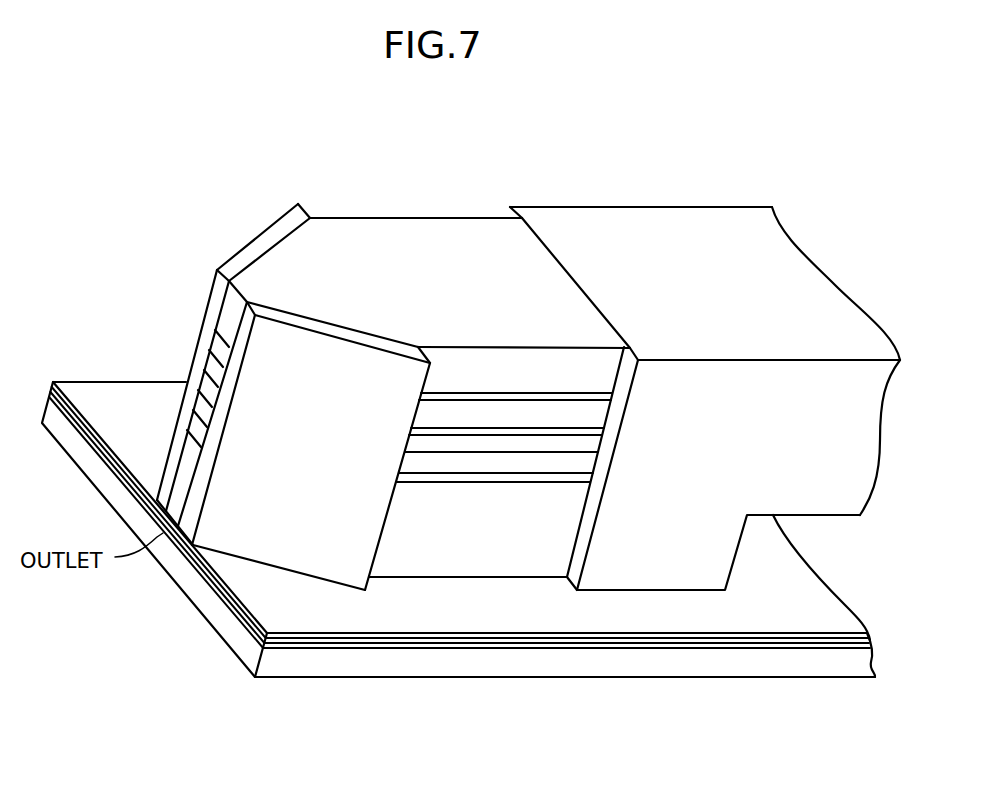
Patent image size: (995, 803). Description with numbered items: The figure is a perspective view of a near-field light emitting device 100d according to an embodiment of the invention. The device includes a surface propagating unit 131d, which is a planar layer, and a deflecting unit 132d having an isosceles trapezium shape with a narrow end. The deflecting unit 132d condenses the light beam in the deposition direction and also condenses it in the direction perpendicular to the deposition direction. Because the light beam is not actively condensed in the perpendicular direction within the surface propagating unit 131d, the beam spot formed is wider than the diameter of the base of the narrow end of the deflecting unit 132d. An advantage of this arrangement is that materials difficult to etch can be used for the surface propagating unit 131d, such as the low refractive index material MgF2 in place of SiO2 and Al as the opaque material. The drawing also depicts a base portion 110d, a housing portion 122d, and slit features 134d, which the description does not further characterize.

The near-field light emitting device 100d is at (761, 116).
The housing 122d is at (717, 218).
The louver slits 134d is at (255, 402).
The base plate 110d is at (393, 665).
The surface propagating unit 131d is at (480, 633).
The deflecting unit 132d is at (505, 348).